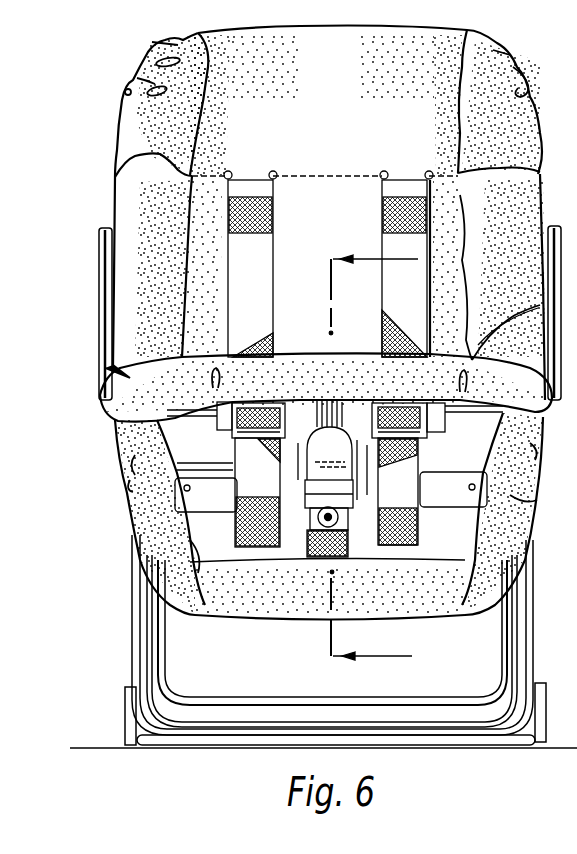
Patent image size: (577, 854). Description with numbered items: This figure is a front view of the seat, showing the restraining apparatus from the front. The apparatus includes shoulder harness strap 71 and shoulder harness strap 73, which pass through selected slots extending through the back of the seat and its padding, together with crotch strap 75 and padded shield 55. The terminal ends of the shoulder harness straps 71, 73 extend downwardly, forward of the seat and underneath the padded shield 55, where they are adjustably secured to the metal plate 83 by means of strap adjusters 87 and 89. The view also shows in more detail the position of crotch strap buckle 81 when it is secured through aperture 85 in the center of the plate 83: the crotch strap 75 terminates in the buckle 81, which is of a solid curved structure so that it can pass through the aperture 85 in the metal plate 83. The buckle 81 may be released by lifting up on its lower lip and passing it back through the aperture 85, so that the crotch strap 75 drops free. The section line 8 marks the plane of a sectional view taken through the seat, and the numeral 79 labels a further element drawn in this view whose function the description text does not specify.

The section line 8- 8 is at (361, 461).
The shield 55 is at (316, 356).
The shoulder harness strap 71 is at (382, 215).
The shoulder harness strap 73 is at (273, 212).
The crotch strap 75 is at (350, 560).
The right lap strap 79 is at (434, 518).
The crotch strap buckle 81 is at (310, 560).
The metal plate 83 is at (280, 448).
The aperture 85 is at (336, 425).
The strap adjuster 87 is at (223, 432).
The strap adjuster 89 is at (445, 420).